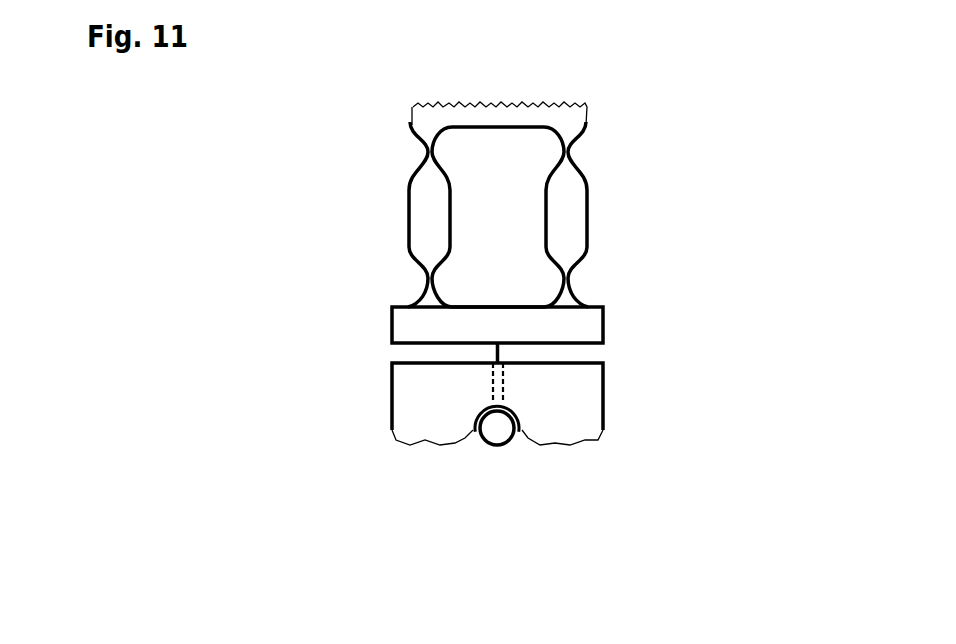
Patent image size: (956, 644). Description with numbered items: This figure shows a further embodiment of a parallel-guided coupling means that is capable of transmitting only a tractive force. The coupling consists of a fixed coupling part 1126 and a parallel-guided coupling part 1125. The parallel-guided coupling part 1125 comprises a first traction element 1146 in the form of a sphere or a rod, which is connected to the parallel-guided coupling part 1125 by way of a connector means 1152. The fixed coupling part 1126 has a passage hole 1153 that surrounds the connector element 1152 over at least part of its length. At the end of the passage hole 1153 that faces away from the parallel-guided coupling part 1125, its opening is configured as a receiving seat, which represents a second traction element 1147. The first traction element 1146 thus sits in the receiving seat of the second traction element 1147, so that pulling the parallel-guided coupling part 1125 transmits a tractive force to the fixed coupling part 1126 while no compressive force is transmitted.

The parallel-guided coupling part 1125 is at (632, 210).
The fixed coupling part 1126 is at (618, 422).
The connector means 1152 is at (500, 353).
The passage hole 1153 is at (491, 383).
The second traction element 1147 is at (478, 412).
The first traction element 1146 is at (495, 420).